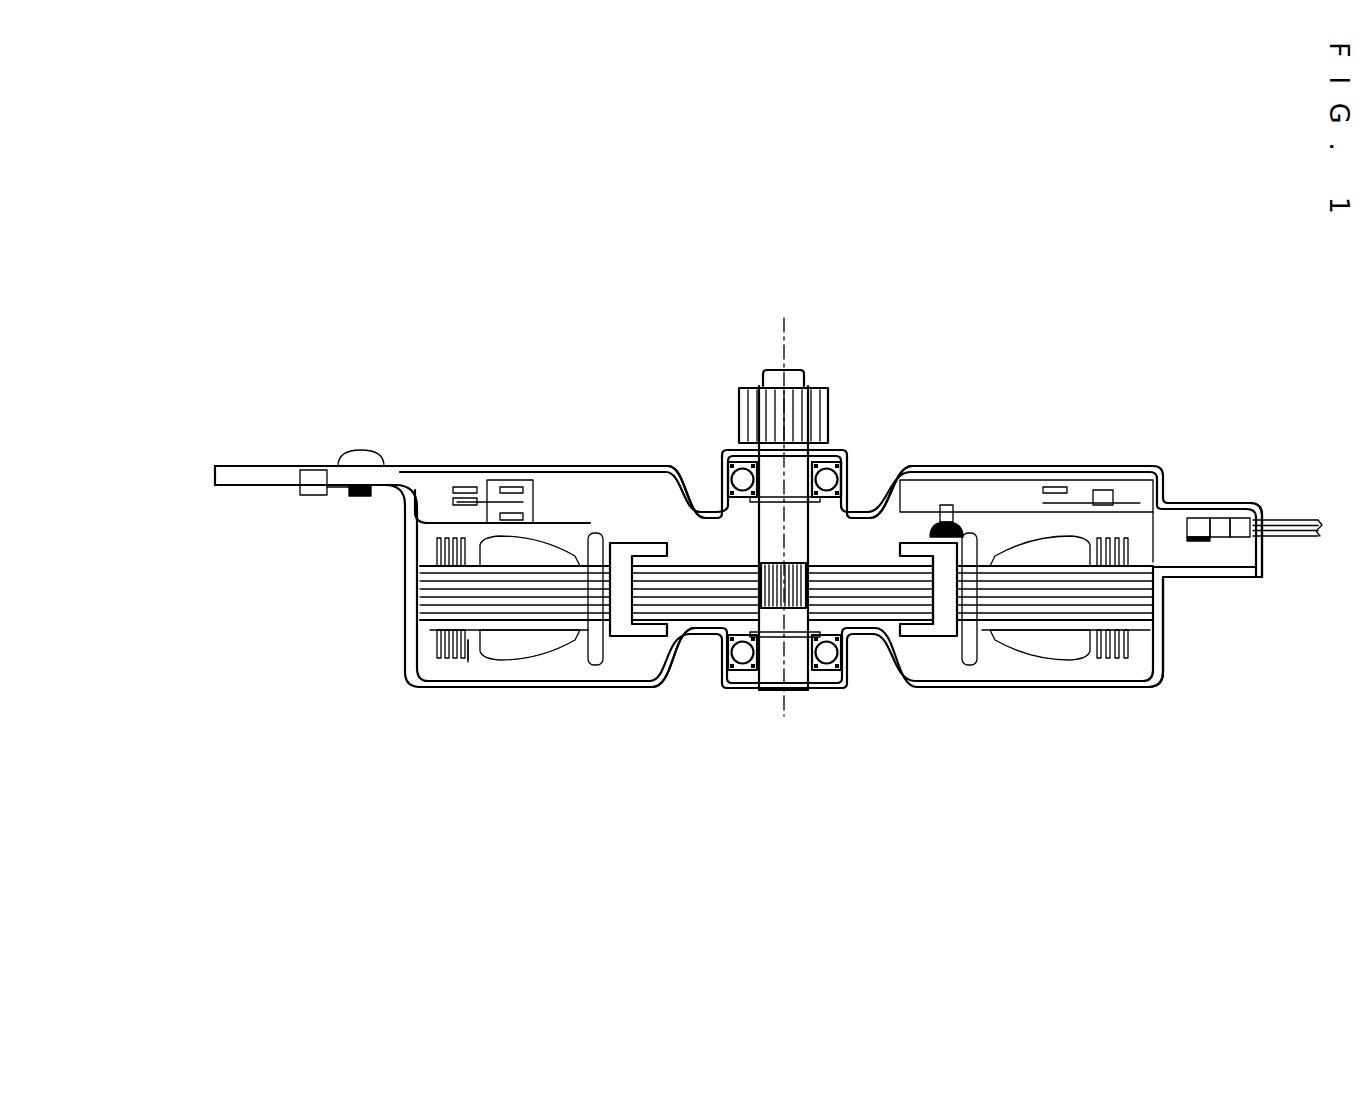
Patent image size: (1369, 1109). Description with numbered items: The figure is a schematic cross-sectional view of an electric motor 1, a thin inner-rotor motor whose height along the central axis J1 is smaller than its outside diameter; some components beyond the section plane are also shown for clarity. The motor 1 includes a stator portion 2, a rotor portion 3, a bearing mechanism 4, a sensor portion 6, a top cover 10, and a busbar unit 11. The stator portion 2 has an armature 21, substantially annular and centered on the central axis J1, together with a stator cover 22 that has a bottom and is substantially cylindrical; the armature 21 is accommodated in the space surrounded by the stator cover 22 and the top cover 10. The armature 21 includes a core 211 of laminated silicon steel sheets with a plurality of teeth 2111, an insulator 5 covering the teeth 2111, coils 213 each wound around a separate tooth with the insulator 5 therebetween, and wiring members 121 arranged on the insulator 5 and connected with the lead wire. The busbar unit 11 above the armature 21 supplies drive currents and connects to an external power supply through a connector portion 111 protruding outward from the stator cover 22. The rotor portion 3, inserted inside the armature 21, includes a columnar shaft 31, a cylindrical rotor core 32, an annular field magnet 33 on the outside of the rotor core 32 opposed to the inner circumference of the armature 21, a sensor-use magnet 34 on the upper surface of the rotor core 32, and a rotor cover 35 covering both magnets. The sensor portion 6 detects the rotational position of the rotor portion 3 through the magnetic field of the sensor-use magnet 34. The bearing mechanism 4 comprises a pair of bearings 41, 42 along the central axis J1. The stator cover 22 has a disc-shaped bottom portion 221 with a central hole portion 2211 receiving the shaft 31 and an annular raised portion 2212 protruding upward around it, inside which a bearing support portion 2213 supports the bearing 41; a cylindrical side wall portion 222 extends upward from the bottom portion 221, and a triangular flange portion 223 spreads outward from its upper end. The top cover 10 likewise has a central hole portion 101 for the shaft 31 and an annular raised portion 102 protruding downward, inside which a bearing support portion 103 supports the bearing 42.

The electric motor 1 is at (330, 260).
The central axis J1 is at (784, 338).
The stator portion 2 is at (307, 828).
The armature 21 is at (438, 831).
The core 211 is at (392, 766).
The teeth 2111 is at (467, 627).
The coils 213 is at (537, 660).
The insulator 5 is at (470, 663).
The stator cover 22 is at (361, 656).
The bottom portion 221 is at (1125, 695).
The hole portion 2211 is at (801, 718).
The annular raised portion 2212 is at (667, 653).
The bearing support portion 2213 is at (717, 653).
The side wall portion 222 is at (1163, 648).
The flange portion 223 is at (255, 487).
The rotor portion 3 is at (991, 833).
The shaft 31 is at (797, 680).
The rotor core 32 is at (850, 592).
The field magnet 33 is at (943, 625).
The sensor-use magnet 34 is at (943, 550).
The rotor cover 35 is at (983, 637).
The bearing mechanism 4 is at (733, 784).
The bearing 41 is at (740, 665).
The bearing 42 is at (740, 460).
The sensor portion 6 is at (962, 535).
The top cover 10 is at (580, 466).
The hole portion 101 is at (828, 462).
The annular raised portion 102 is at (882, 505).
The bearing support portion 103 is at (710, 484).
The busbar unit 11 is at (548, 500).
The connector portion 111 is at (1203, 530).
The wiring members 121 is at (450, 533).